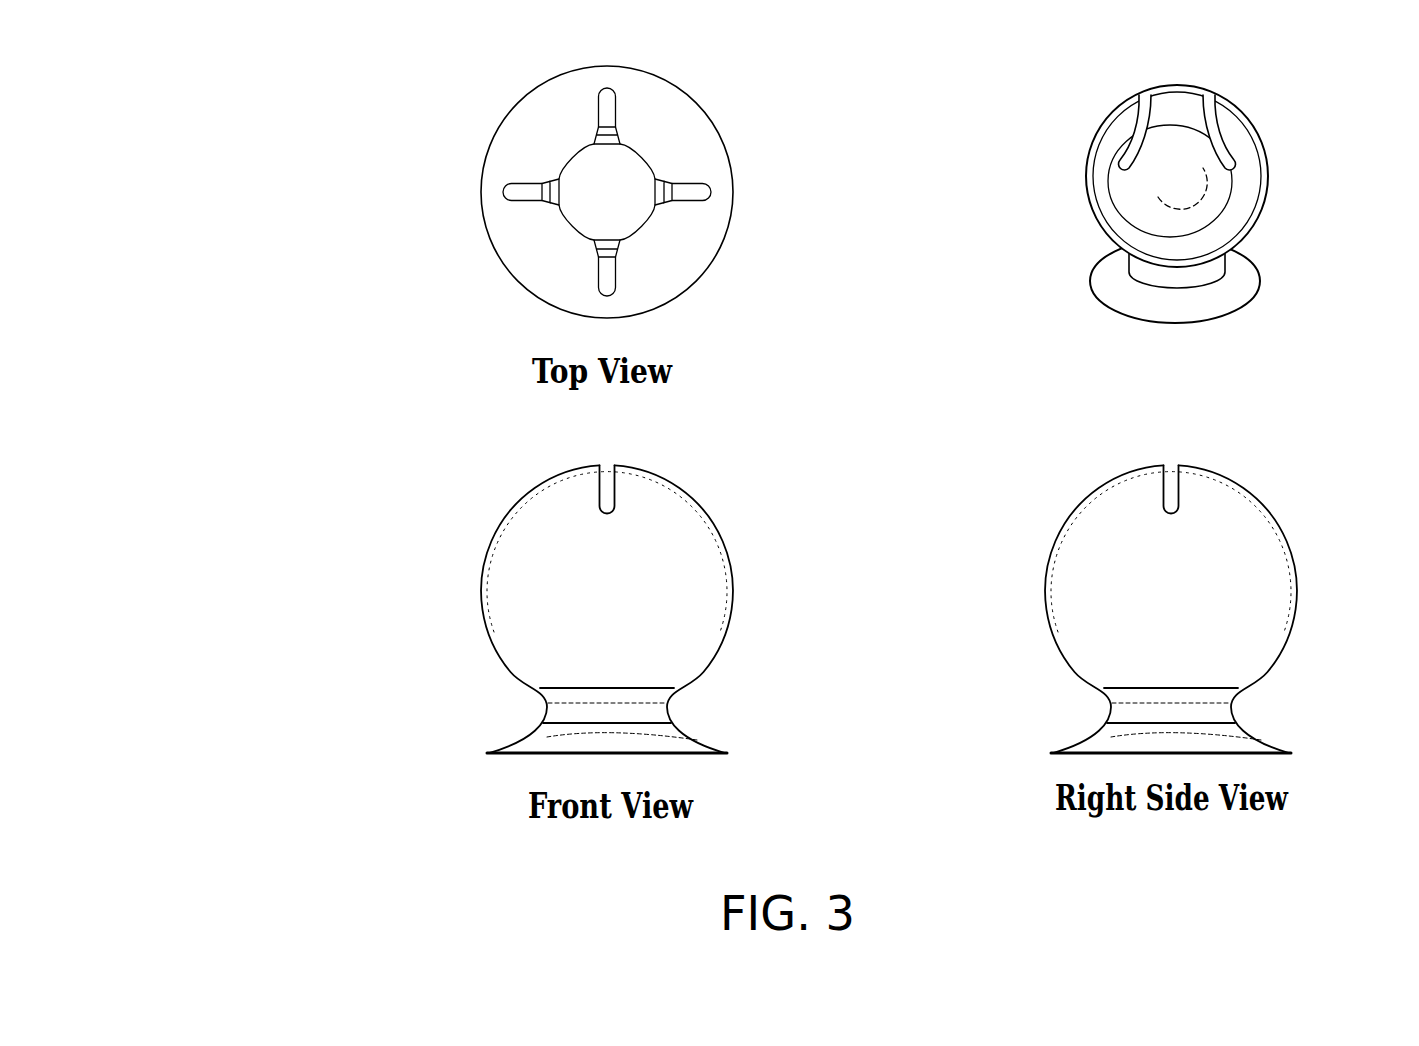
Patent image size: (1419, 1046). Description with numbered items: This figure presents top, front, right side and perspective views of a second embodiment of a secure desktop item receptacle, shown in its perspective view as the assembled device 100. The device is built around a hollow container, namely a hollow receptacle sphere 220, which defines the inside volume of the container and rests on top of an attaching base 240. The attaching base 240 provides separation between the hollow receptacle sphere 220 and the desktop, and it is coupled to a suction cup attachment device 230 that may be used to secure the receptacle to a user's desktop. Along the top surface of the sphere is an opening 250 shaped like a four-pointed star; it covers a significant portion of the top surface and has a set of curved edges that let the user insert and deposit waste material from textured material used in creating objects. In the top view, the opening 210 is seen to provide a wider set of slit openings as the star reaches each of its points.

The holder device 100 is at (1233, 128).
The slot arm 210 is at (514, 189).
The spherical body 220 is at (588, 582).
The suction cup base 230 is at (607, 740).
The neck 240 is at (672, 713).
The slot 250 is at (645, 498).